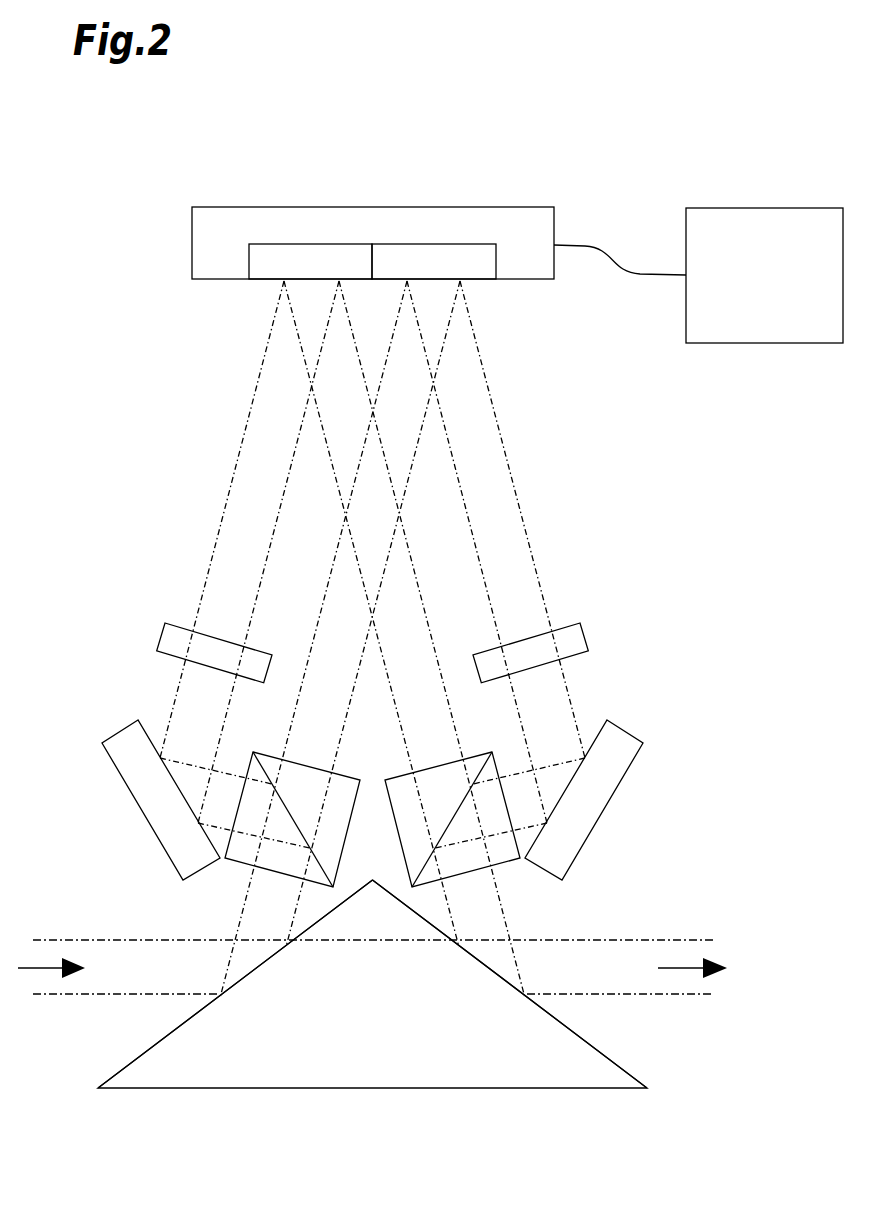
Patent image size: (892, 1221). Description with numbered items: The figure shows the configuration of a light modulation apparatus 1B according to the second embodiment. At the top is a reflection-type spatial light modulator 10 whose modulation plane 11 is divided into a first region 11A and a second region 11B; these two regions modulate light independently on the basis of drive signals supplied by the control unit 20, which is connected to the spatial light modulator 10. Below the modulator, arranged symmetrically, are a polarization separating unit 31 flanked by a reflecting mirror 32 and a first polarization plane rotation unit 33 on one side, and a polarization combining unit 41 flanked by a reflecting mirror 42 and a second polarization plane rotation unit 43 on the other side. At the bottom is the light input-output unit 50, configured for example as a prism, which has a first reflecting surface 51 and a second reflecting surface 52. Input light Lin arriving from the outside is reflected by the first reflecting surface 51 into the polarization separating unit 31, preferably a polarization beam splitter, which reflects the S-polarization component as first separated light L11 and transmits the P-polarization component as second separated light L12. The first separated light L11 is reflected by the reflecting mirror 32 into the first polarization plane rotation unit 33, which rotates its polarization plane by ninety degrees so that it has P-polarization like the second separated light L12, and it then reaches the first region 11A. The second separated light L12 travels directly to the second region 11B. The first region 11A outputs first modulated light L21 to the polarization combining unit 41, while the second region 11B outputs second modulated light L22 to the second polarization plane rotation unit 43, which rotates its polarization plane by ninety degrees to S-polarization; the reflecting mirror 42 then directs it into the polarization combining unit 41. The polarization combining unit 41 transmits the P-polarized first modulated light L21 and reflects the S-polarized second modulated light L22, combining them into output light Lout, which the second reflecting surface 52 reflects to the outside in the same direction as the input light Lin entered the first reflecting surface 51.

The light modulation apparatus 1B is at (569, 126).
The spatial light modulator 10 is at (222, 207).
The modulation plane 11 is at (458, 156).
The first region 11A is at (313, 244).
The second region 11B is at (436, 244).
The control unit 20 is at (766, 208).
The polarization separating unit 31 is at (230, 866).
The reflecting mirror 32 is at (123, 780).
The first polarization plane rotation unit 33 is at (160, 638).
The polarization combining unit 41 is at (515, 866).
The reflecting mirror 42 is at (622, 780).
The second polarization plane rotation unit 43 is at (585, 638).
The light input-output unit 50 is at (375, 1088).
The first reflecting surface 51 is at (130, 1062).
The second reflecting surface 52 is at (615, 1062).
The first separated light L11 is at (215, 534).
The second separated light L12 is at (320, 607).
The first modulated light L21 is at (425, 607).
The second modulated light L22 is at (530, 534).
The input light Lin is at (63, 995).
The output light Lout is at (681, 995).